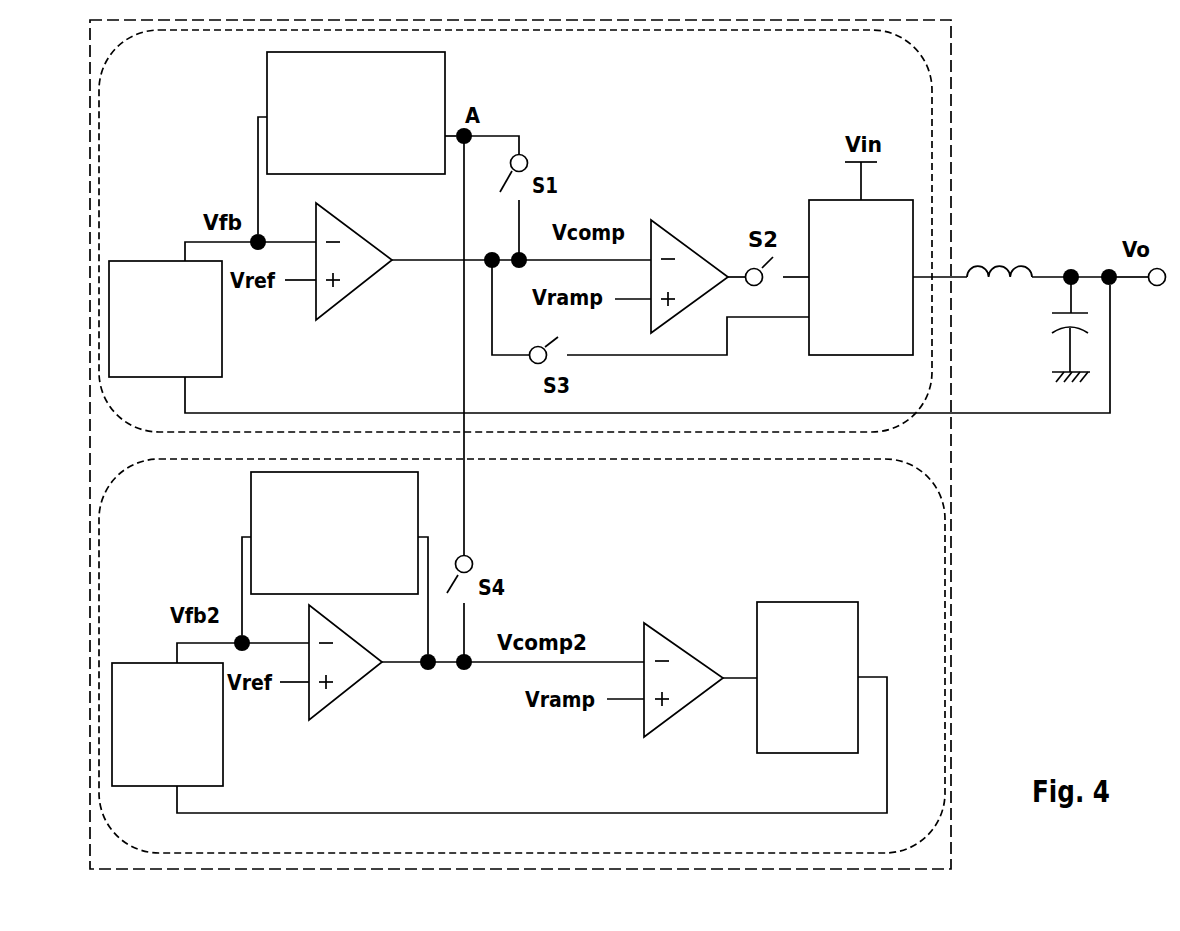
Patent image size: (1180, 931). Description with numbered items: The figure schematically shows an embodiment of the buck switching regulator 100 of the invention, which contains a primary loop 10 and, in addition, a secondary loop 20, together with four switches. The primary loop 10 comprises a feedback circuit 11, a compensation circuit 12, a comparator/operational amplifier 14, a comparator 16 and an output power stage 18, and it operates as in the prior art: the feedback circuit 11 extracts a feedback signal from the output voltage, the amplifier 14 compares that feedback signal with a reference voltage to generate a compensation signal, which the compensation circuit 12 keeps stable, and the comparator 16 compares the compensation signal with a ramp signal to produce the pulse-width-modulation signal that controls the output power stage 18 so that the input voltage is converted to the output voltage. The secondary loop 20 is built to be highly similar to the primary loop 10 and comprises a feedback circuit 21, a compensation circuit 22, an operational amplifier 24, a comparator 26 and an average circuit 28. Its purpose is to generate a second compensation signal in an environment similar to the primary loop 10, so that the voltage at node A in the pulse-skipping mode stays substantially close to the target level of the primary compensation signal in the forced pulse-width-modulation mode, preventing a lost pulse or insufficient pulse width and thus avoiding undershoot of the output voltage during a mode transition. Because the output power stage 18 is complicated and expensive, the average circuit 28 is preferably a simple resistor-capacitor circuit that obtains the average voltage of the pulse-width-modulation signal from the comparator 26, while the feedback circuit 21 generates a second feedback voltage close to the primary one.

The buck switching regulator 100 is at (952, 507).
The primary loop 10 is at (128, 106).
The feedback circuit 11 is at (153, 360).
The compensation circuit 12 is at (343, 152).
The comparator/operational amplifier 14 is at (372, 249).
The comparator 16 is at (678, 237).
The output power stage 18 is at (848, 331).
The secondary loop 20 is at (167, 524).
The feedback circuit 21 is at (154, 766).
The compensation circuit 22 is at (321, 574).
The operational amplifier 24 is at (368, 650).
The comparator 26 is at (673, 640).
The average circuit 28 is at (794, 719).